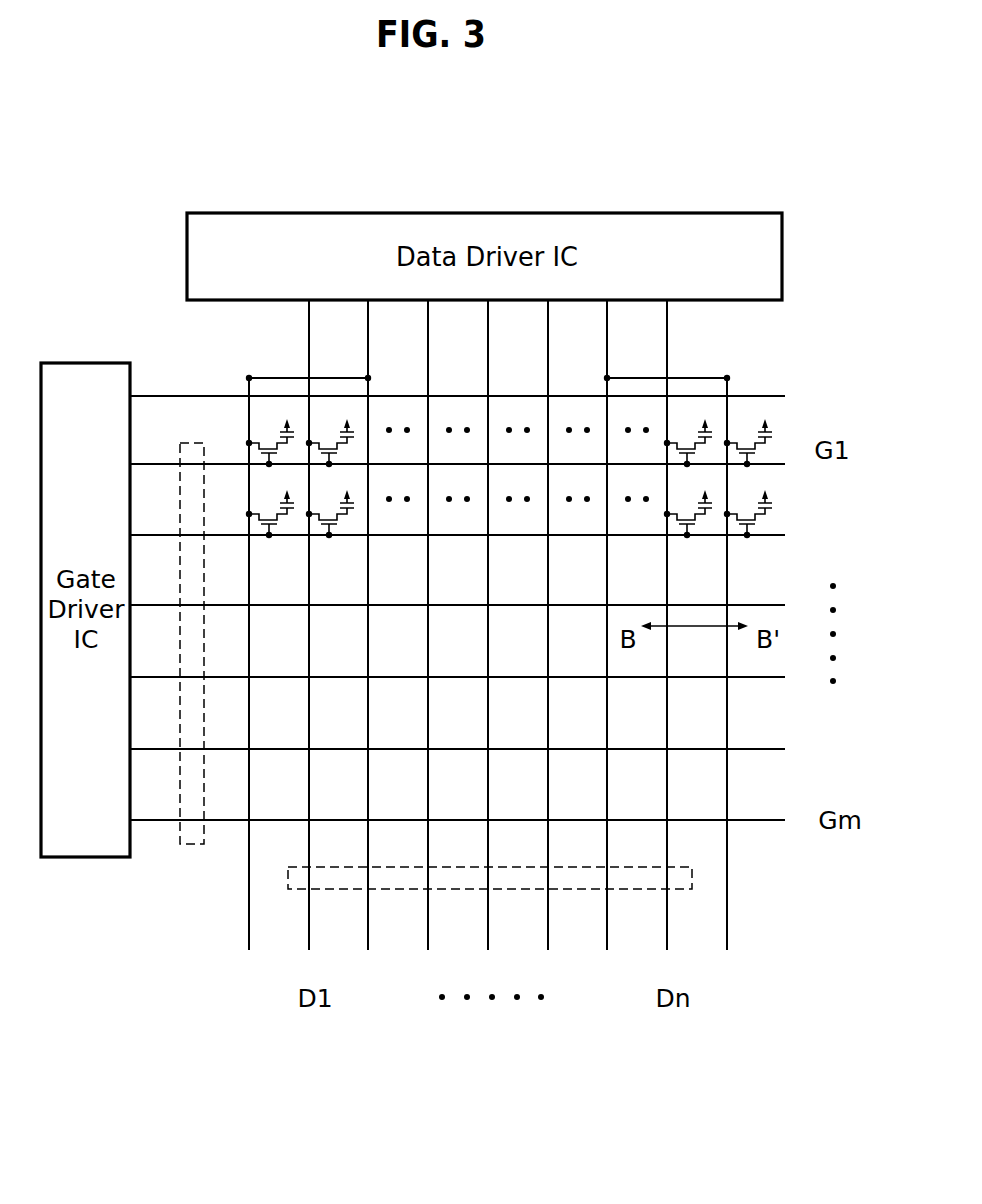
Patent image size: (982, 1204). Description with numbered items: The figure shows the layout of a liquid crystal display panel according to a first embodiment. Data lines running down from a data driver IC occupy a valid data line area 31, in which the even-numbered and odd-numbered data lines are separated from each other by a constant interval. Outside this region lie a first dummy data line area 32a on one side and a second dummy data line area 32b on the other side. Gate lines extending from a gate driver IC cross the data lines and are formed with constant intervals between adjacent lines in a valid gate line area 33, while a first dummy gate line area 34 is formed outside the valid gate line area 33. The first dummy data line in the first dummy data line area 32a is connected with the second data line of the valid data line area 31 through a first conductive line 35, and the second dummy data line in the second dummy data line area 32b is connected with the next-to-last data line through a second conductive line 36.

The valid data line area 31 is at (568, 882).
The first dummy data line area 32a is at (252, 928).
The second dummy data line area 32b is at (729, 860).
The valid gate line area 33 is at (193, 844).
The first dummy gate line area 34 is at (760, 390).
The first conductive line 35 is at (277, 377).
The second conductive line 36 is at (692, 376).